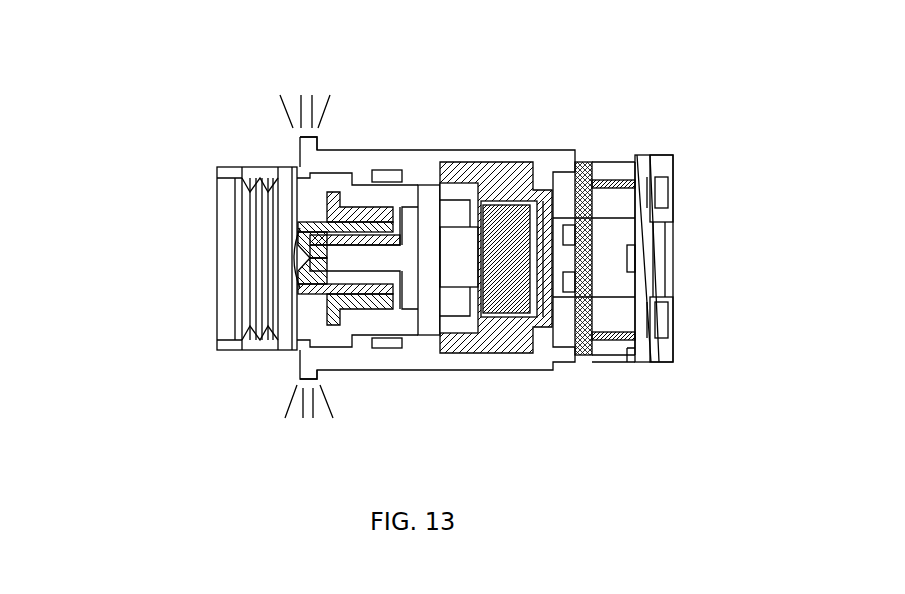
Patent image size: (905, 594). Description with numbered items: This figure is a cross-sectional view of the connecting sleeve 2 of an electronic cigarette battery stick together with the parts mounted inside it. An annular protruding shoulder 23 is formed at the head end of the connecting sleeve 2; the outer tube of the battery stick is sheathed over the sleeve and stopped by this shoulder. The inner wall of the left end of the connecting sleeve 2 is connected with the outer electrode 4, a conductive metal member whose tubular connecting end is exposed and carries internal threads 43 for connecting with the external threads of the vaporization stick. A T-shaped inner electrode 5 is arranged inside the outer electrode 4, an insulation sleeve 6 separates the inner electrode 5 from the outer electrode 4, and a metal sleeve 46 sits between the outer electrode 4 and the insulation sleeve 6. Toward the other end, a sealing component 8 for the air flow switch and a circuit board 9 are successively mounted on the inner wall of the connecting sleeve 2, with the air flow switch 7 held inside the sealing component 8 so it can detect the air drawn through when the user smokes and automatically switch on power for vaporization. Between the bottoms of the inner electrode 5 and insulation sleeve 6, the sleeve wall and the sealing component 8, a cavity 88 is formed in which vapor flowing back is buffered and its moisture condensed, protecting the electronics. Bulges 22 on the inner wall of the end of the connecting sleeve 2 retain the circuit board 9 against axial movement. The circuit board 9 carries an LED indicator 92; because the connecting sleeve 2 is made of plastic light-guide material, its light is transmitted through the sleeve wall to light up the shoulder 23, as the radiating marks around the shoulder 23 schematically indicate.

The connecting sleeve 2 is at (387, 158).
The outer electrode 4 is at (252, 166).
The inner electrode 5 is at (287, 248).
The insulation sleeve 6 is at (307, 298).
The air flow switch 7 is at (493, 270).
The sealing component for the air flow switch 8 is at (514, 180).
The circuit board 9 is at (585, 210).
The bulges 22 is at (660, 320).
The shoulder 23 is at (320, 138).
The internal threads 43 is at (247, 208).
The metal sleeve 46 is at (335, 305).
The cavity 88 is at (430, 202).
The LED indicator 92 is at (623, 365).